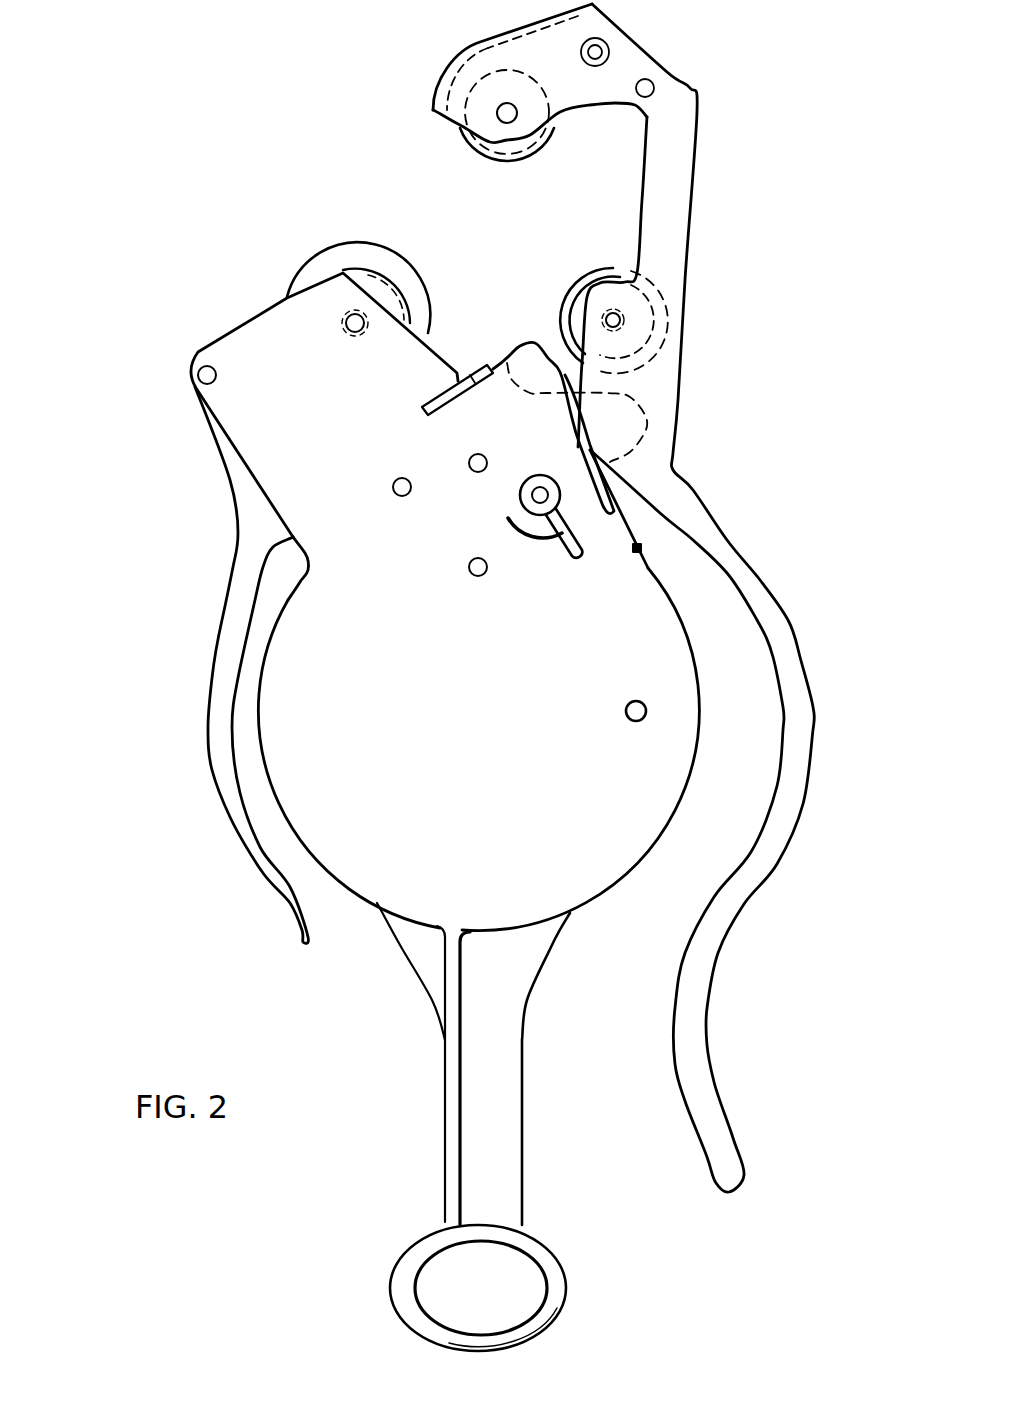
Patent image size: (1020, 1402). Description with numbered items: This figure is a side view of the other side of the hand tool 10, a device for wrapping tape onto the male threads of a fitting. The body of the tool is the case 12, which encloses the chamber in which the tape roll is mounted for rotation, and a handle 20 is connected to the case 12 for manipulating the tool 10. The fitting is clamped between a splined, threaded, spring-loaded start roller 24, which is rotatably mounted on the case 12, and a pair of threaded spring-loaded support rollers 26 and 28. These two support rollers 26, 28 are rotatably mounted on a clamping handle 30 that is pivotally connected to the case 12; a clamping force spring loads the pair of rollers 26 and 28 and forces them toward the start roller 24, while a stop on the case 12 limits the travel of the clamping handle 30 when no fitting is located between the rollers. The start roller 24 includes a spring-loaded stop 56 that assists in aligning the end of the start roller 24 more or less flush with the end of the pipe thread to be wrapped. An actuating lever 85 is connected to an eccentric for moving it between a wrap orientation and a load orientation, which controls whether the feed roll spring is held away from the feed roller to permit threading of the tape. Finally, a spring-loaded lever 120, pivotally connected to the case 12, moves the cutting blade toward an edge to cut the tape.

The hand tool 10 is at (156, 725).
The case 12 is at (437, 761).
The handle 20 is at (450, 1090).
The start roller 24 is at (400, 292).
The support roller 26 is at (590, 278).
The support roller 28 is at (530, 162).
The clamping handle 30 is at (768, 866).
The spring-loaded stop 56 is at (358, 251).
The actuating lever 85 is at (564, 546).
The spring-loaded lever 120 is at (285, 886).